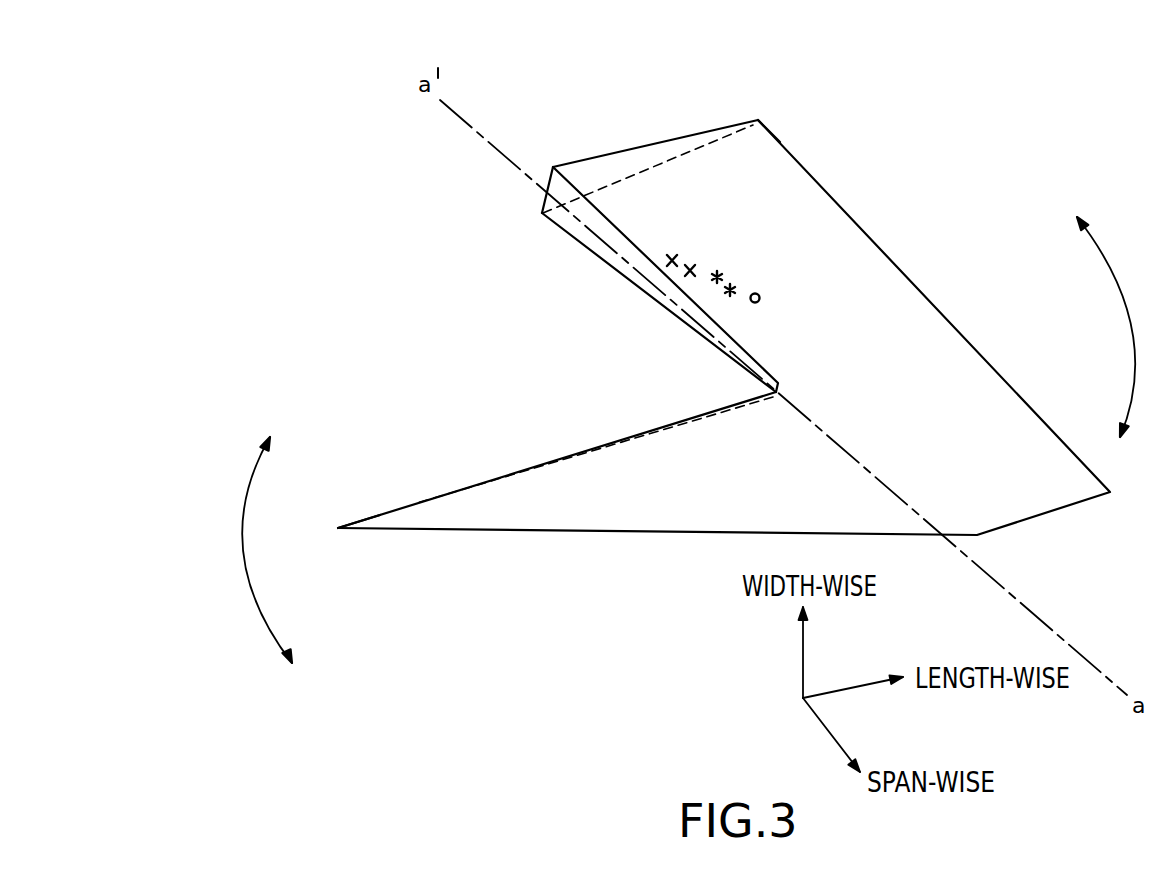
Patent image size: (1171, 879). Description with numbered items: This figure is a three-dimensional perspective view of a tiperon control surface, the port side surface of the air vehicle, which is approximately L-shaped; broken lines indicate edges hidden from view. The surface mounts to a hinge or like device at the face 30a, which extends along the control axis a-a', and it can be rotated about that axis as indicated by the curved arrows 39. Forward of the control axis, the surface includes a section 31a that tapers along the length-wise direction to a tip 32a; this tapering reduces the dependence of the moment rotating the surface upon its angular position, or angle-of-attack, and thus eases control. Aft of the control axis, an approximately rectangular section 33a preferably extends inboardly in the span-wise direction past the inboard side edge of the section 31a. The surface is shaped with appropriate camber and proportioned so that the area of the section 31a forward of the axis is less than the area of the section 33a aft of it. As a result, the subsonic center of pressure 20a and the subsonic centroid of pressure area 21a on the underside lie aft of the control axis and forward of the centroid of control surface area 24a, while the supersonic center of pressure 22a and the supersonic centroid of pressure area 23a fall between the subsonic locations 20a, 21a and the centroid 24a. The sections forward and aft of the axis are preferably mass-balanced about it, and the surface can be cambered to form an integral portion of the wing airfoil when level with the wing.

The subsonic center of pressure 20a is at (683, 246).
The subsonic centroid of pressure area 21a is at (702, 263).
The supersonic center of pressure 22a is at (725, 273).
The supersonic centroid of pressure area 23a is at (739, 287).
The centroid of control surface area 24a is at (768, 298).
The face 30a is at (597, 238).
The section 31a is at (722, 492).
The tip 32a is at (342, 537).
The section 33a is at (764, 152).
The rotation direction of blade about axis a-a' 39 is at (1057, 163).